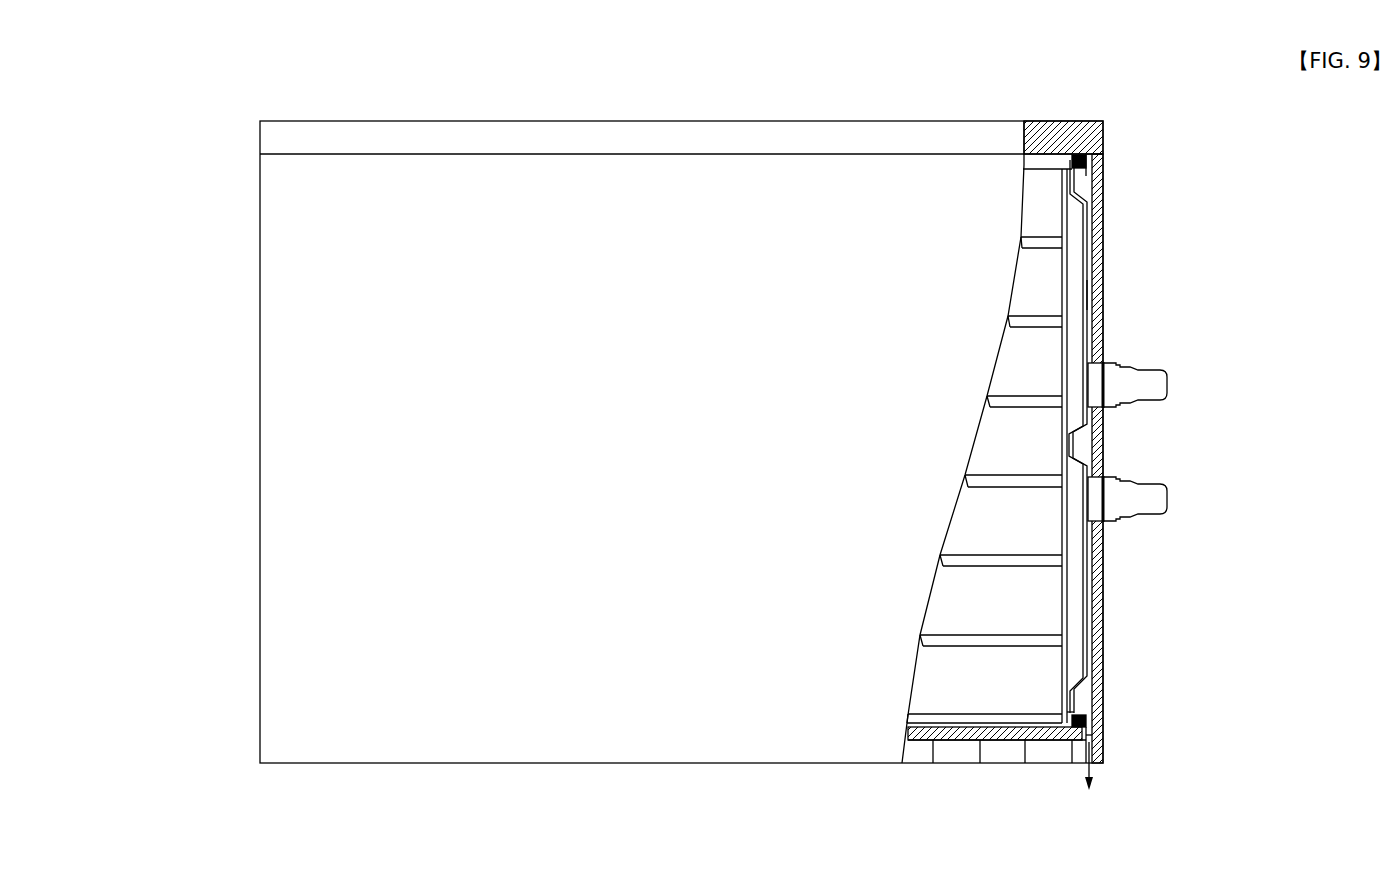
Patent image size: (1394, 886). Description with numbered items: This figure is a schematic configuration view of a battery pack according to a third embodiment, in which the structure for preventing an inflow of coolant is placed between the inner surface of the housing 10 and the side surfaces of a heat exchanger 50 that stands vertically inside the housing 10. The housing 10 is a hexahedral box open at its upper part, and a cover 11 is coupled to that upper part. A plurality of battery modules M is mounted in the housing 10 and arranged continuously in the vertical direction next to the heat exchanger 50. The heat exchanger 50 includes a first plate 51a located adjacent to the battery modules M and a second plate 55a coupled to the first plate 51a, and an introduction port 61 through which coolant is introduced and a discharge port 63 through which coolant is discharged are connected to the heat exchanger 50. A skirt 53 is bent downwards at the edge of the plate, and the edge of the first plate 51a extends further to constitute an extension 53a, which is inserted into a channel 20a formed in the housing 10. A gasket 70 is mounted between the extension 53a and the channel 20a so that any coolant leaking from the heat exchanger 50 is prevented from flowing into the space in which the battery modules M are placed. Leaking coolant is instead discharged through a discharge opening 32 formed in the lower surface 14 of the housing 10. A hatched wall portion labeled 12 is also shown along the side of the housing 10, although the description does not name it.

The housing 10 is at (240, 608).
The cover 11 is at (522, 133).
The side plate of cabinet 12 is at (1095, 672).
The lower surface of the housing 14 is at (997, 745).
The battery module M is at (1030, 285).
The channel 20a is at (1086, 163).
The discharge opening 32 is at (1086, 722).
The heat exchanger 50 is at (1092, 272).
The first plate 51a is at (1067, 332).
The skirt 53 is at (1072, 725).
The extension 53a is at (1080, 155).
The second plate 55a is at (1087, 295).
The introduction port 61 is at (1160, 388).
The discharge port 63 is at (1160, 502).
The gasket 70 is at (1080, 752).